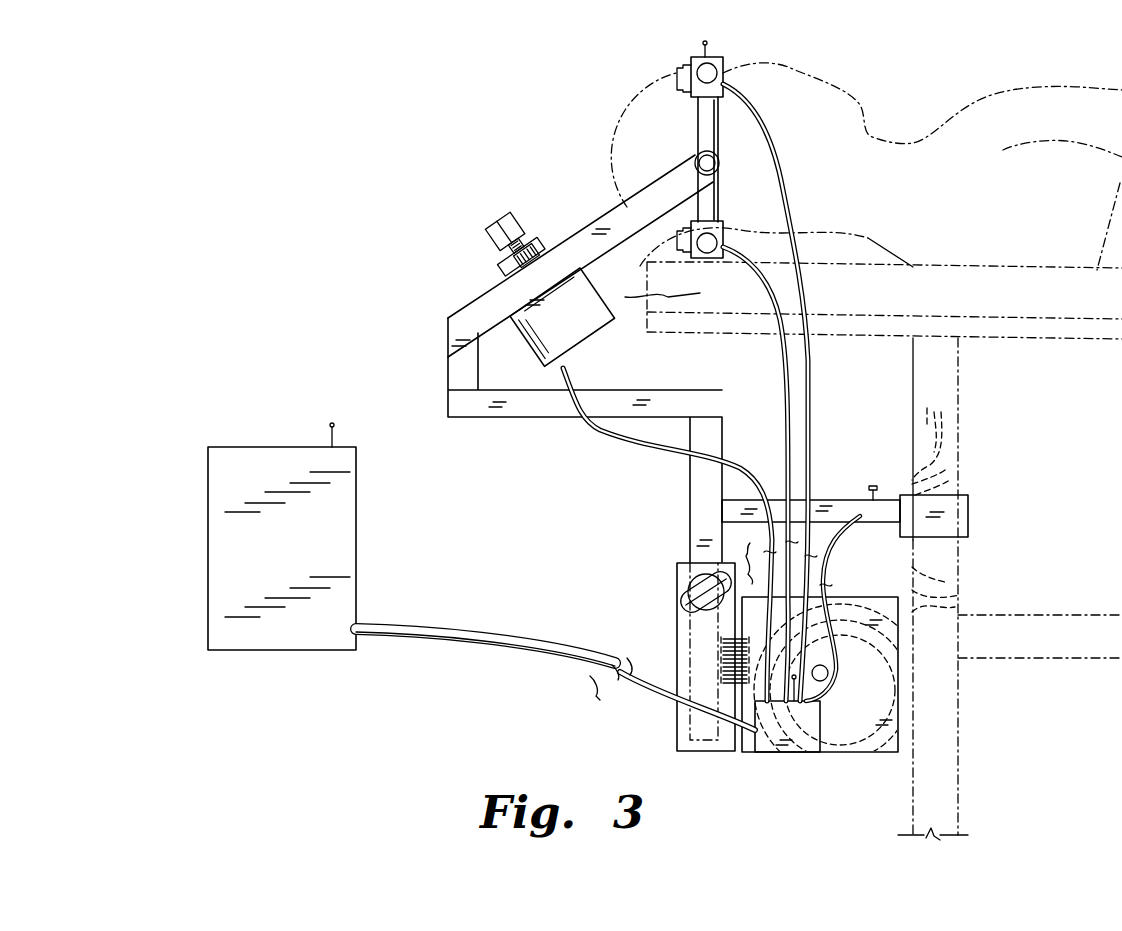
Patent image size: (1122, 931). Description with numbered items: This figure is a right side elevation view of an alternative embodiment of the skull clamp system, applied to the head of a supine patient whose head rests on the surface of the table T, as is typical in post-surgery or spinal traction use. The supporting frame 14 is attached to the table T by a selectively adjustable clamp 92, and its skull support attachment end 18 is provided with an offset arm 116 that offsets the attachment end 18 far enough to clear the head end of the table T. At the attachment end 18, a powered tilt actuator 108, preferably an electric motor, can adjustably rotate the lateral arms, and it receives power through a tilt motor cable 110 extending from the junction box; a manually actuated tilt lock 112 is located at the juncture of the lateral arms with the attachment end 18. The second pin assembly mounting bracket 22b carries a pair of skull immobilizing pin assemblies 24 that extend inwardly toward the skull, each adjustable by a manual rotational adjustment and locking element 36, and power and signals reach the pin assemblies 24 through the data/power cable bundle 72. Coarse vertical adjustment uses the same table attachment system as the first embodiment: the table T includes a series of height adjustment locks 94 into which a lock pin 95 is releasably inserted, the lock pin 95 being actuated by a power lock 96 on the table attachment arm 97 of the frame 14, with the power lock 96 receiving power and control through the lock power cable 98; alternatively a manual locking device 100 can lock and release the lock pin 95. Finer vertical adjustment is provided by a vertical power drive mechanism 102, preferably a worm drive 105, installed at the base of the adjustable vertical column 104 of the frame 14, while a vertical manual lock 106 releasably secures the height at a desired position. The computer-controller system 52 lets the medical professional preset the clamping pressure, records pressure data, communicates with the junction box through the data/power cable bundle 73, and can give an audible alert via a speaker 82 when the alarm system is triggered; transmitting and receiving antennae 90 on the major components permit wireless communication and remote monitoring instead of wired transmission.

The supporting frame 14 is at (500, 428).
The skull support attachment end 18 is at (450, 313).
The second pin assembly mounting bracket 22b is at (722, 195).
The skull immobilizing pin assembly 24 is at (736, 54).
The manual rotational adjustment and locking element 36 is at (676, 72).
The computer-controller system 52 is at (252, 447).
The data/power cable bundle 72 is at (790, 370).
The data/power cable bundle 73 is at (532, 652).
The speaker 82 is at (797, 490).
The transmitting and receiving antennae 90 is at (700, 45).
The selectively adjustable clamp 92 is at (970, 516).
The height adjustment locks 94 is at (983, 598).
The lock pin 95 is at (903, 538).
The power lock 96 is at (870, 537).
The table attachment arm 97 is at (830, 498).
The lock power cable 98 is at (840, 652).
The manual locking device 100 is at (873, 490).
The vertical power drive mechanism 102 is at (748, 690).
The adjustable vertical column 104 is at (700, 651).
The worm drive 105 is at (680, 636).
The vertical manual lock 106 is at (686, 568).
The powered tilt actuator 108 is at (600, 335).
The tilt motor cable 110 is at (615, 438).
The manually actuated tilt lock 112 is at (498, 246).
The offset arm 116 is at (460, 401).
The table T is at (1022, 340).